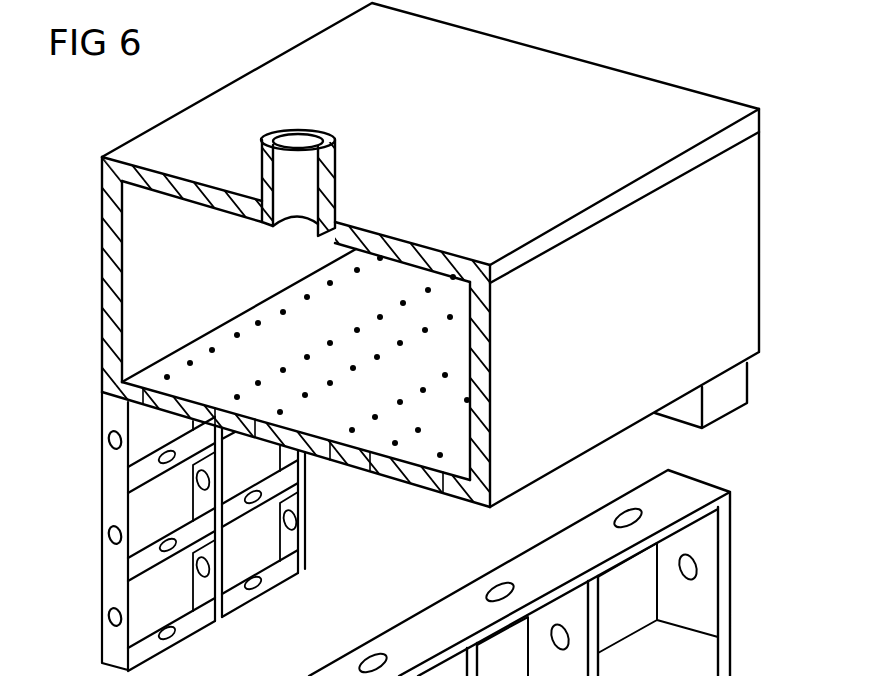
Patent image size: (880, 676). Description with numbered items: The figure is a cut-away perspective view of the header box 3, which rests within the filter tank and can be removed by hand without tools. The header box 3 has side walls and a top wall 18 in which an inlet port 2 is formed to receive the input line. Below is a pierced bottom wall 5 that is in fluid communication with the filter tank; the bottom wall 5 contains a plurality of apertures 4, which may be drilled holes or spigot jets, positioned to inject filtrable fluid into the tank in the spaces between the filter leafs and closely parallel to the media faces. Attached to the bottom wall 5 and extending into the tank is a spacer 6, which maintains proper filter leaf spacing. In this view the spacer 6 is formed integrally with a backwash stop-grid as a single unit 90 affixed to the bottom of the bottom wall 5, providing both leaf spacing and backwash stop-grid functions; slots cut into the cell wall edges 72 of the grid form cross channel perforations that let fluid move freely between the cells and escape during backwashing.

The inlet port 2 is at (334, 190).
The header box 3 is at (797, 214).
The apertures 4 is at (303, 396).
The bottom wall 5 is at (181, 411).
The spacer 6 is at (748, 405).
The top wall 18 is at (714, 112).
The cell wall edges 72 is at (486, 573).
The single unit 90 is at (172, 531).